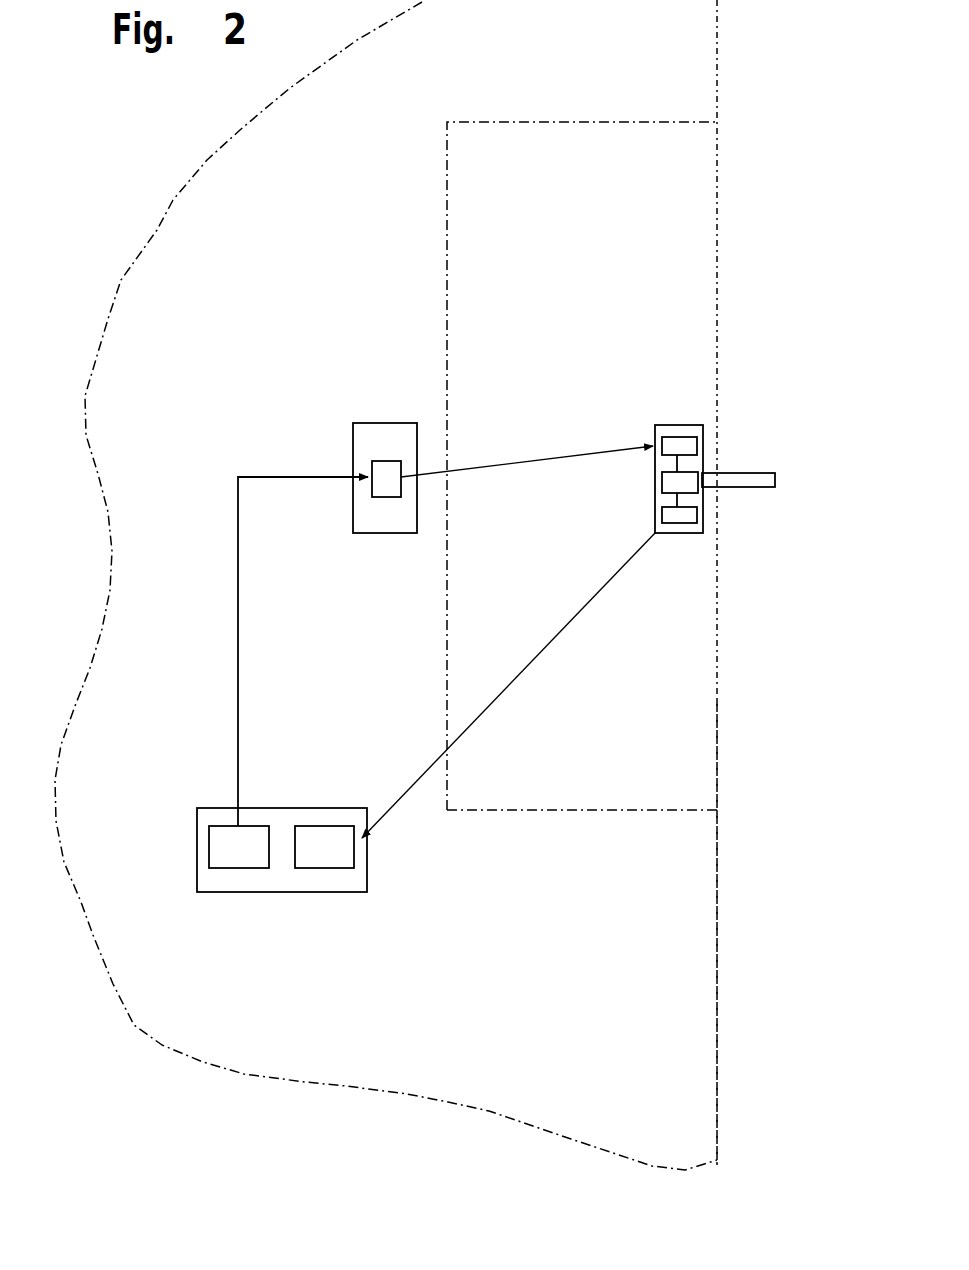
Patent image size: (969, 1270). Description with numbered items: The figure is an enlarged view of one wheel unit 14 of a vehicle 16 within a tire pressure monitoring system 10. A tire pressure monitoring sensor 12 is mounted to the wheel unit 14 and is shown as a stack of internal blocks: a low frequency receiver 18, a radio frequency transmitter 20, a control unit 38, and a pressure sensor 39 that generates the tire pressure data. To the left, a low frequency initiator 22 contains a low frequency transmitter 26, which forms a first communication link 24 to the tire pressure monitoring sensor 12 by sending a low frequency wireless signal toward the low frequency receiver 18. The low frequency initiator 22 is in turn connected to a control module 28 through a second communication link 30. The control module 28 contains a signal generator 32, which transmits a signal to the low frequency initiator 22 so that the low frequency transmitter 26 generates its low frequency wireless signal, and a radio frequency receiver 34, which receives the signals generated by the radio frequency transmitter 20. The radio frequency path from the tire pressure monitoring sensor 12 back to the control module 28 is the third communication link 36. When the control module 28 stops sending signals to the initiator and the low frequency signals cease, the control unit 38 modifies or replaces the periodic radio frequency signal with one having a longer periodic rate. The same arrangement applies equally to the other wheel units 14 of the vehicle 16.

The tire pressure monitoring system 10 is at (208, 276).
The tire pressure monitoring sensor 12 is at (665, 425).
The wheel unit 14 is at (683, 718).
The vehicle 16 is at (689, 947).
The low frequency receiver 18 is at (683, 442).
The radio frequency transmitter 20 is at (690, 520).
The low frequency initiator 22 is at (383, 423).
The first communication link 24 is at (520, 462).
The low frequency transmitter 26 is at (387, 490).
The control module 28 is at (255, 892).
The second communication link 30 is at (237, 583).
The signal generator 32 is at (250, 826).
The radio frequency receiver 34 is at (318, 826).
The third communication link 36 is at (492, 698).
The control unit 38 is at (688, 477).
The pressure sensor 39 is at (700, 480).